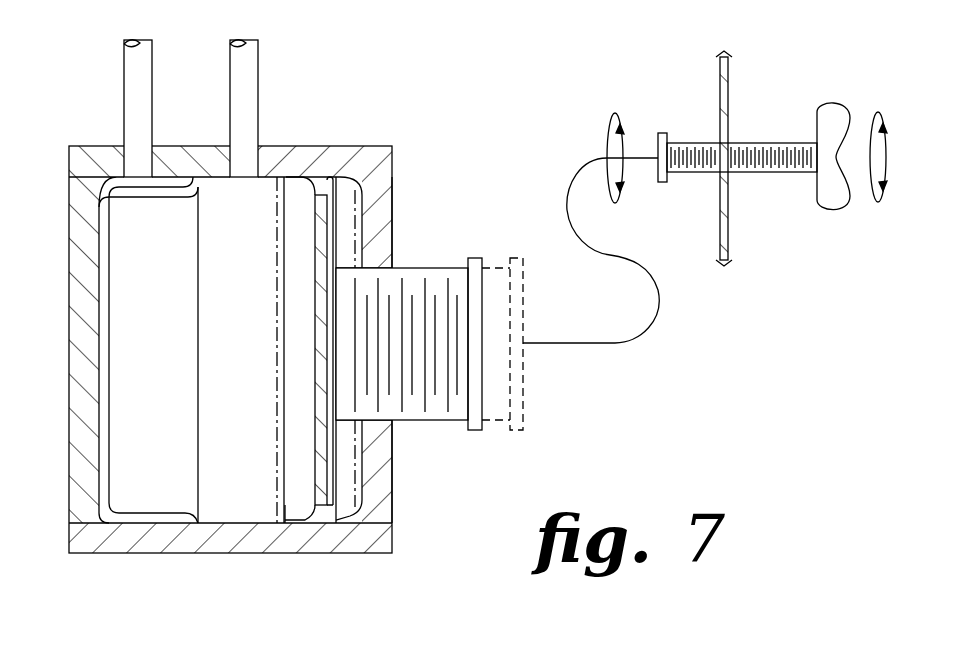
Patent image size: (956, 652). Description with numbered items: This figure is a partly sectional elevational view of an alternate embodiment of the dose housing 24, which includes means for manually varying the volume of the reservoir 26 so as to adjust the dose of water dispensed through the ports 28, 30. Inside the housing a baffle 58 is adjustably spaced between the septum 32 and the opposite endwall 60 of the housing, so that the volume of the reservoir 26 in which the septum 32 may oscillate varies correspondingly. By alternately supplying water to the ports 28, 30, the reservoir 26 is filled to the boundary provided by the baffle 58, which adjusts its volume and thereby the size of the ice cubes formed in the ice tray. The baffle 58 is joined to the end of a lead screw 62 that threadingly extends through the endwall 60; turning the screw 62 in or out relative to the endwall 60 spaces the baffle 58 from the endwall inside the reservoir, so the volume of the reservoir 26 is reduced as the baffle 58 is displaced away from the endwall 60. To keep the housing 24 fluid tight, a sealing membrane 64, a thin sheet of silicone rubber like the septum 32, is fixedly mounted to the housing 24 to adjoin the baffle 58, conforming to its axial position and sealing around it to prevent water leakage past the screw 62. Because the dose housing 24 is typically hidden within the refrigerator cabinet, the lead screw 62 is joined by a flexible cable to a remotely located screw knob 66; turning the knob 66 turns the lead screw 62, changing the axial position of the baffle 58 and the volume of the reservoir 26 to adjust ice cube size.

The dose housing 24 is at (69, 175).
The reservoir 26 is at (157, 391).
The port 28 is at (152, 98).
The port 30 is at (258, 118).
The septum 32 is at (104, 293).
The baffle 58 is at (335, 476).
The endwall 60 is at (392, 192).
The lead screw 62 is at (420, 262).
The sealing membrane 64 is at (318, 405).
The screw knob 66 is at (833, 209).